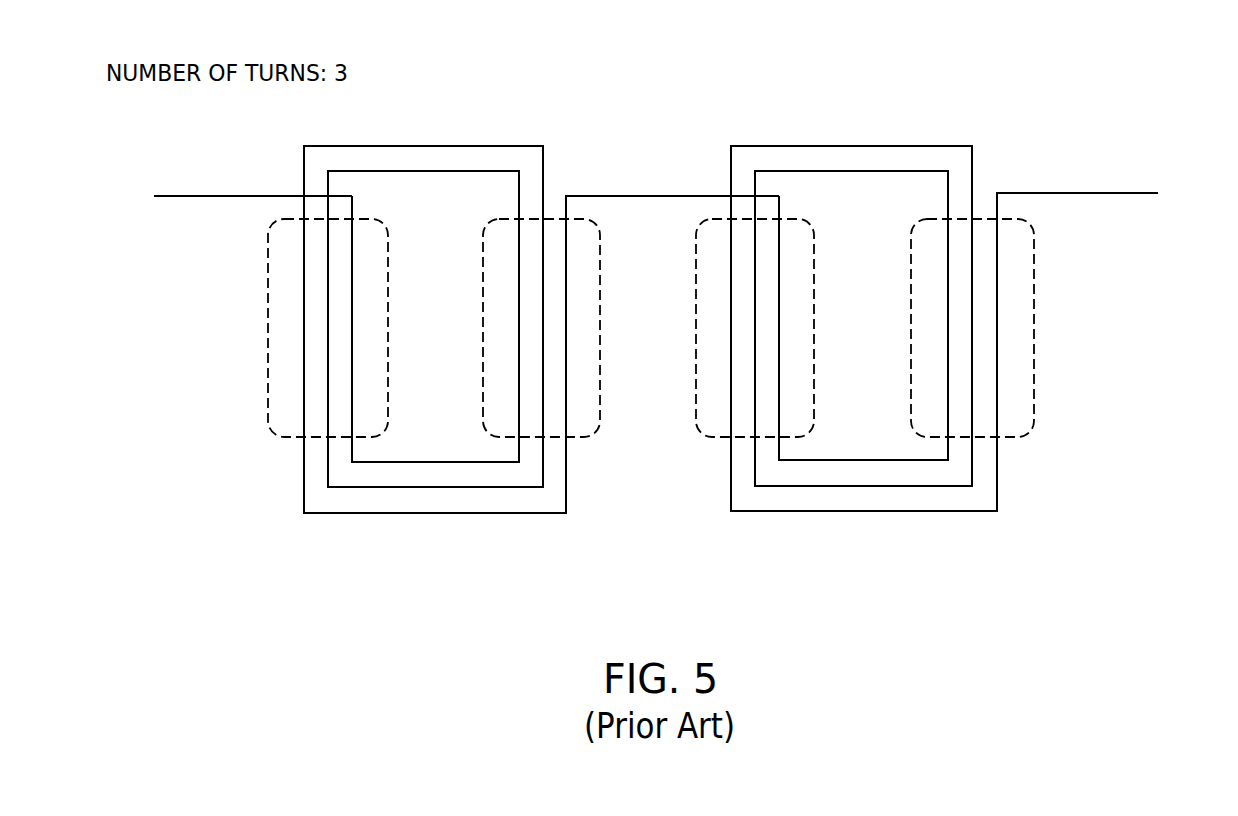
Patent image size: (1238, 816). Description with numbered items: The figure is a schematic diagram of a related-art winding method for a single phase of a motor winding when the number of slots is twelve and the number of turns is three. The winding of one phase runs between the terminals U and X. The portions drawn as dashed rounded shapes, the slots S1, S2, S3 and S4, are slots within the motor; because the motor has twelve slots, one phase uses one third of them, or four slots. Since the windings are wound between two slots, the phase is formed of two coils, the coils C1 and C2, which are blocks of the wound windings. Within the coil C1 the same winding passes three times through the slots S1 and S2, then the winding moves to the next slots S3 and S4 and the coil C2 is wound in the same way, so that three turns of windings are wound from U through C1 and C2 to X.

The winding terminal U is at (129, 178).
The winding terminal X is at (1189, 210).
The coil C1 is at (309, 545).
The coil C2 is at (737, 543).
The slot S1 is at (210, 359).
The slot S2 is at (433, 359).
The slot S3 is at (646, 359).
The slot S4 is at (860, 359).